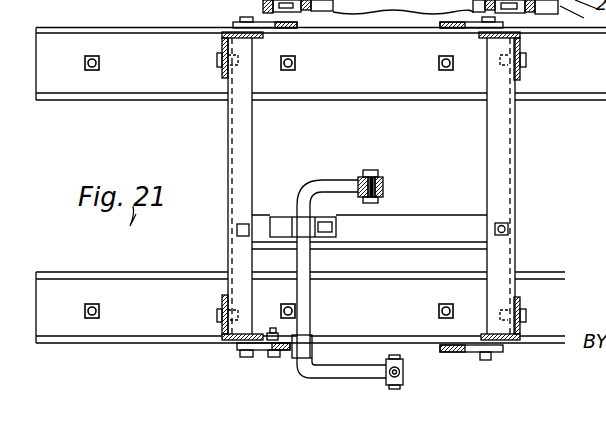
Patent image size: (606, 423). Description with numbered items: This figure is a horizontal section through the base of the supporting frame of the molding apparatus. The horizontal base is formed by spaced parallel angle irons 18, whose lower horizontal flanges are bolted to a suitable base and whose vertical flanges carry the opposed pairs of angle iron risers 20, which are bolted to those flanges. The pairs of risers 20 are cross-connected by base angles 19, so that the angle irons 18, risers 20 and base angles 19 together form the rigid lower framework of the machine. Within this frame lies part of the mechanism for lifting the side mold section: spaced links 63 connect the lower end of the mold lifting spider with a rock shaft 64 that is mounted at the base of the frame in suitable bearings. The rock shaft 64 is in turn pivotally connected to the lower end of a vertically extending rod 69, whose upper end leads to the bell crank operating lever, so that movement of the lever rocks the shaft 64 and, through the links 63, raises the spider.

The angle iron 18 is at (321, 186).
The base angle 19 is at (233, 158).
The angle iron riser 20 is at (222, 32).
The link 63 is at (391, 193).
The rock shaft 64 is at (341, 187).
The rod 69 is at (404, 370).